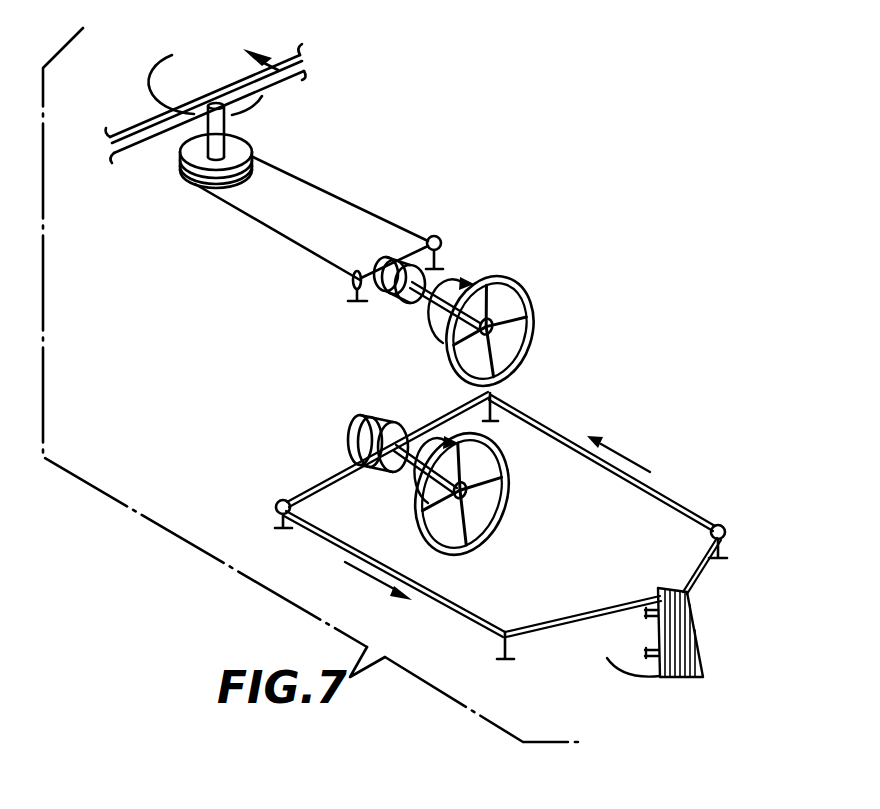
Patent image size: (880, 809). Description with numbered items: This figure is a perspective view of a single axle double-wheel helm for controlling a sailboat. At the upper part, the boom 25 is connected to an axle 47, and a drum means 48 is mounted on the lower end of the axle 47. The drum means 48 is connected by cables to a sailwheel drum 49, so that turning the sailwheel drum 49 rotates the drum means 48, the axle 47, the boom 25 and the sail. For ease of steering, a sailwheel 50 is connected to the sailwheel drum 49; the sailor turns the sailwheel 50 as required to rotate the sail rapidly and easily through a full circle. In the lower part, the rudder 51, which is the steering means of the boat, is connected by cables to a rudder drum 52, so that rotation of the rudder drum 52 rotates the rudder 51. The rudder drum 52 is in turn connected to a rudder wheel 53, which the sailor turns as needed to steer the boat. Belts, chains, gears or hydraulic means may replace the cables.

The boom 25 is at (305, 102).
The axle 47 is at (185, 160).
The drum means 48 is at (205, 203).
The sailwheel drum 49 is at (383, 258).
The sailwheel 50 is at (500, 277).
The rudder 51 is at (687, 633).
The rudder drum 52 is at (362, 415).
The rudder wheel 53 is at (507, 443).